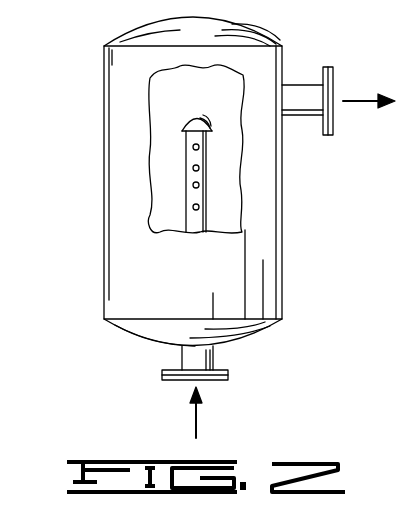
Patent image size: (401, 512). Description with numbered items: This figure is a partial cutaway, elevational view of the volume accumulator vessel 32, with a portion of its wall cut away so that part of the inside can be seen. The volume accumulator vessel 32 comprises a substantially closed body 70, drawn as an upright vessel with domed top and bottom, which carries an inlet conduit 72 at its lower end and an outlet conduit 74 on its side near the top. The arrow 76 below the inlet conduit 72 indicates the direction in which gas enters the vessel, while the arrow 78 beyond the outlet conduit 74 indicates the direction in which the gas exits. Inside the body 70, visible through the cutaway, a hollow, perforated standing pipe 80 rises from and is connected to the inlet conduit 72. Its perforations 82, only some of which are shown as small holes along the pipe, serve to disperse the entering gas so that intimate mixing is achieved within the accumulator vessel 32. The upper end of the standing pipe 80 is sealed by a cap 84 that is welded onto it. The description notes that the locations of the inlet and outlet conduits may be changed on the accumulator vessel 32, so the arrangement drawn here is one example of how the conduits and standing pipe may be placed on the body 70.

The volume accumulator vessel 32 is at (96, 80).
The substantially closed body 70 is at (104, 222).
The inlet conduit 72 is at (200, 360).
The outlet conduit 74 is at (304, 118).
The arrow 76 is at (203, 418).
The arrow 78 is at (358, 101).
The hollow, perforated standing pipe 80 is at (193, 230).
The perforations 82 is at (190, 167).
The cap 84 is at (193, 118).